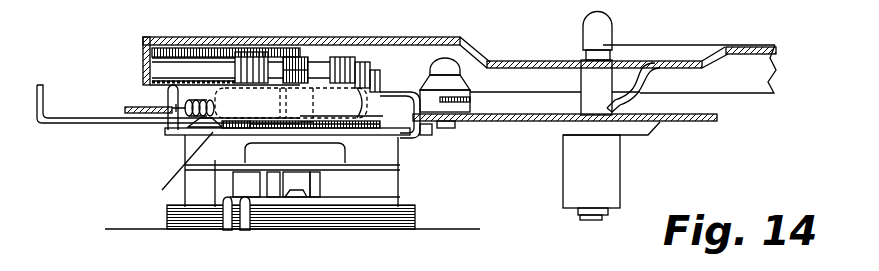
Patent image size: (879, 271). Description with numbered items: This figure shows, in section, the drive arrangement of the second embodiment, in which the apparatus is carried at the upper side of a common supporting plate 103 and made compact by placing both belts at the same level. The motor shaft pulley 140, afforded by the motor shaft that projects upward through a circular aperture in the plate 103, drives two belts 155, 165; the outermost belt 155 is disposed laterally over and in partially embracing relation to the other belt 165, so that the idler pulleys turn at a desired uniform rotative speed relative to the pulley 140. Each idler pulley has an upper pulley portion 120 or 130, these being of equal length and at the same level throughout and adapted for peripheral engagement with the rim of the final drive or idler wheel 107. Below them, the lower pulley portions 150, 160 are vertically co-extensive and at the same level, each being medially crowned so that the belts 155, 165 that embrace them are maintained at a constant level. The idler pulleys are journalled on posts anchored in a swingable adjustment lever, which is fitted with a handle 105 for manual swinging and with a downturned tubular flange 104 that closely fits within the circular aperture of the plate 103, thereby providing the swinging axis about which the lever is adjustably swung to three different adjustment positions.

The supporting plate 103 is at (167, 130).
The downturned tubular flange 104 is at (343, 224).
The handle 105 is at (97, 118).
The final drive or idler wheel 107 is at (184, 62).
The upper pulley portion 120 is at (344, 58).
The upper pulley portion 130 is at (247, 63).
The motor shaft pulley 140 is at (295, 67).
The lower pulley portion 150 is at (372, 131).
The belt 155 is at (347, 130).
The lower pulley portion 160 is at (213, 128).
The belt 165 is at (380, 88).